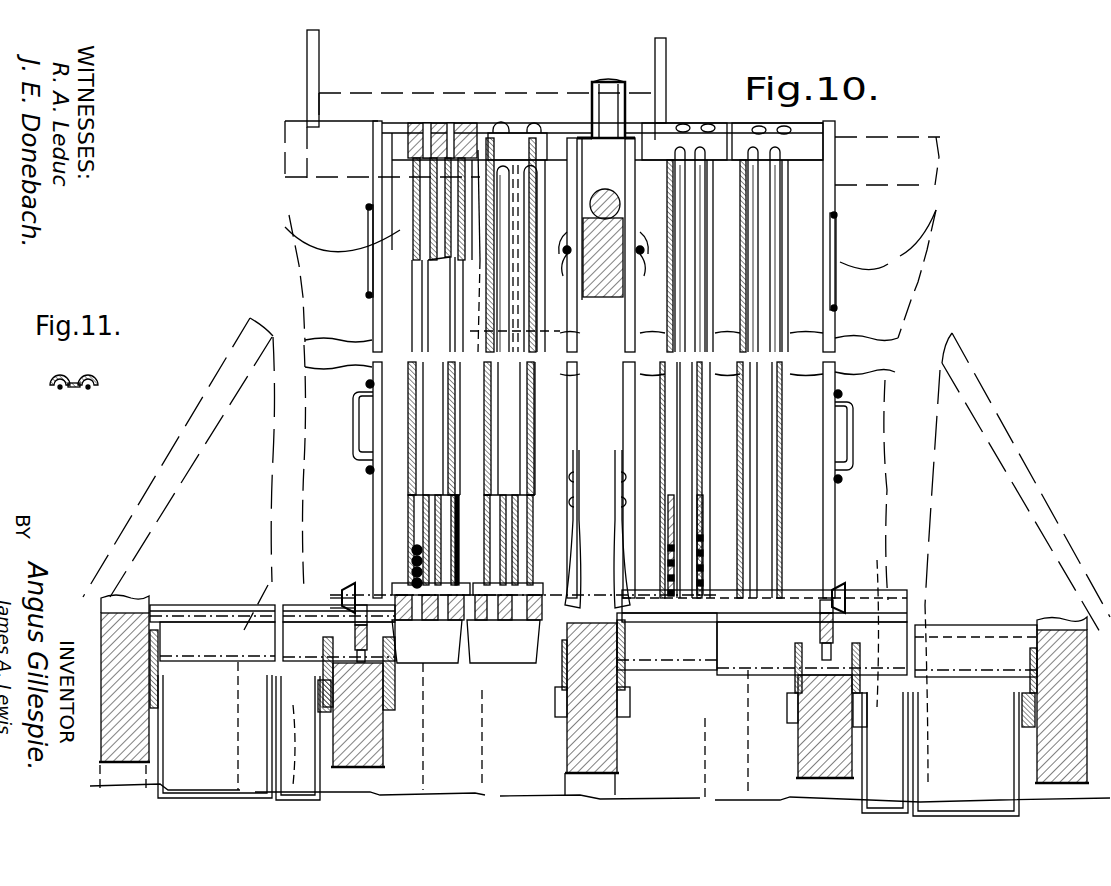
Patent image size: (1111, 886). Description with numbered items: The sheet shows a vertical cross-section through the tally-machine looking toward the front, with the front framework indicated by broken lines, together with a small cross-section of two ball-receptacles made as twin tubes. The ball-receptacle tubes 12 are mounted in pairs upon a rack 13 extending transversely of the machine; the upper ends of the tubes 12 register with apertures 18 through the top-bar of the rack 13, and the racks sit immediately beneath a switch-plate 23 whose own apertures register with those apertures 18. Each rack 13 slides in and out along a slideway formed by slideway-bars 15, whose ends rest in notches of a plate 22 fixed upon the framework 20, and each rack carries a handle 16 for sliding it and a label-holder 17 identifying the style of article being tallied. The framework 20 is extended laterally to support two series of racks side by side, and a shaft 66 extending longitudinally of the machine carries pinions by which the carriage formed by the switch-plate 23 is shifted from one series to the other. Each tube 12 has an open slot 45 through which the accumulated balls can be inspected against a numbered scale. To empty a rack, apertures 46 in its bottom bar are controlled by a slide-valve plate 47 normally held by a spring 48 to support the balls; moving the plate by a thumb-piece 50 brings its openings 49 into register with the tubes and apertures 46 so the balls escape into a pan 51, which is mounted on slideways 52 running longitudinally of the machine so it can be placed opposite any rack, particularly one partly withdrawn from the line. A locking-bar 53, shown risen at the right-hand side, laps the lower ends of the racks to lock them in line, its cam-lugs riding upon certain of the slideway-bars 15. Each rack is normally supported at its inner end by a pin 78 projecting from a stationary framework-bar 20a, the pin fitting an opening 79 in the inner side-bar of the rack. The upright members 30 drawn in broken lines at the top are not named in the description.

In FIG. 10, the ball-receptacle tube 12 is at (413, 478).
In FIG. 11, the ball-receptacle tube 12 is at (88, 374).
In FIG. 10, the ball-receptacle rack 13 is at (373, 538).
In FIG. 10, the slideway-bar 15 is at (200, 612).
In FIG. 10, the handle 16 is at (353, 418).
In FIG. 10, the label-holder 17 is at (368, 236).
In FIG. 10, the aperture 18 is at (462, 122).
In FIG. 10, the framework 20 is at (212, 388).
In FIG. 10, the framework-bar 20a is at (605, 297).
In FIG. 10, the plate 22 is at (160, 642).
In FIG. 10, the switch-plate 23 is at (368, 92).
In FIG. 10, the post 30 is at (306, 52).
In FIG. 10, the open slot 45 is at (668, 566).
In FIG. 11, the open slot 45 is at (60, 392).
In FIG. 10, the aperture 46 is at (418, 620).
In FIG. 10, the slide-valve plate 47 is at (458, 582).
In FIG. 10, the spring 48 is at (594, 562).
In FIG. 10, the opening 49 is at (405, 582).
In FIG. 10, the thumb-piece 50 is at (342, 595).
In FIG. 10, the pan 51 is at (165, 775).
In FIG. 10, the slideway 52 is at (160, 697).
In FIG. 10, the locking-bar 53 is at (352, 632).
In FIG. 10, the shaft 66 is at (608, 80).
In FIG. 10, the pin 78 is at (566, 246).
In FIG. 10, the opening 79 is at (563, 258).